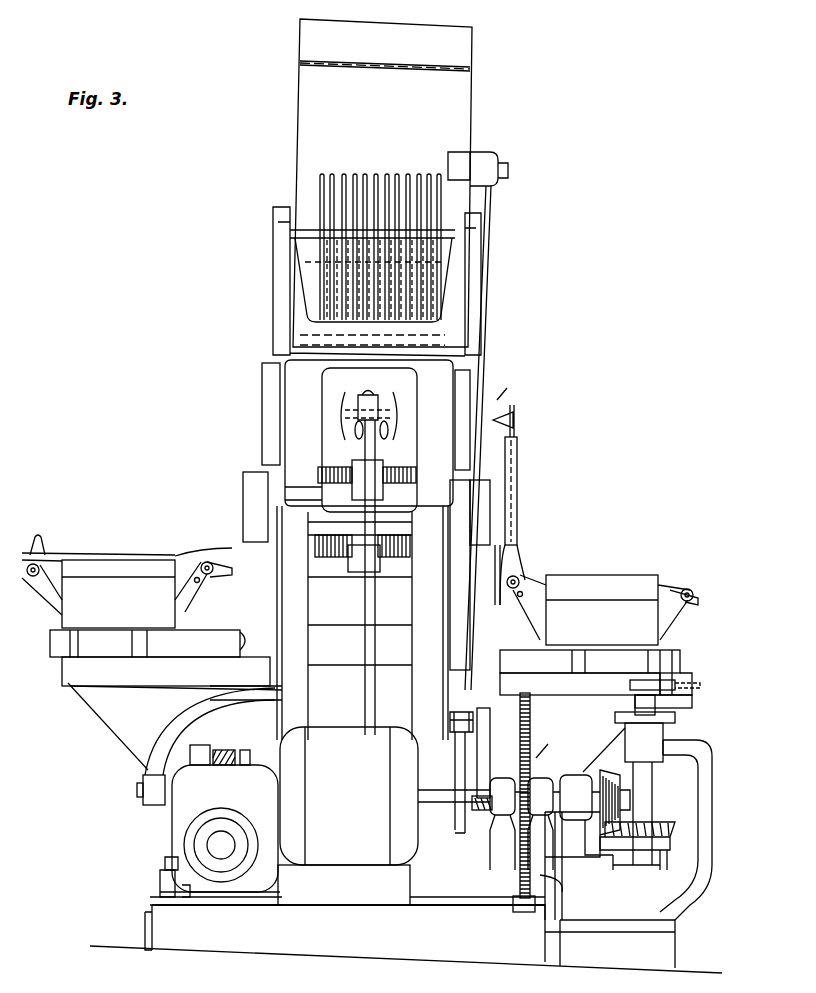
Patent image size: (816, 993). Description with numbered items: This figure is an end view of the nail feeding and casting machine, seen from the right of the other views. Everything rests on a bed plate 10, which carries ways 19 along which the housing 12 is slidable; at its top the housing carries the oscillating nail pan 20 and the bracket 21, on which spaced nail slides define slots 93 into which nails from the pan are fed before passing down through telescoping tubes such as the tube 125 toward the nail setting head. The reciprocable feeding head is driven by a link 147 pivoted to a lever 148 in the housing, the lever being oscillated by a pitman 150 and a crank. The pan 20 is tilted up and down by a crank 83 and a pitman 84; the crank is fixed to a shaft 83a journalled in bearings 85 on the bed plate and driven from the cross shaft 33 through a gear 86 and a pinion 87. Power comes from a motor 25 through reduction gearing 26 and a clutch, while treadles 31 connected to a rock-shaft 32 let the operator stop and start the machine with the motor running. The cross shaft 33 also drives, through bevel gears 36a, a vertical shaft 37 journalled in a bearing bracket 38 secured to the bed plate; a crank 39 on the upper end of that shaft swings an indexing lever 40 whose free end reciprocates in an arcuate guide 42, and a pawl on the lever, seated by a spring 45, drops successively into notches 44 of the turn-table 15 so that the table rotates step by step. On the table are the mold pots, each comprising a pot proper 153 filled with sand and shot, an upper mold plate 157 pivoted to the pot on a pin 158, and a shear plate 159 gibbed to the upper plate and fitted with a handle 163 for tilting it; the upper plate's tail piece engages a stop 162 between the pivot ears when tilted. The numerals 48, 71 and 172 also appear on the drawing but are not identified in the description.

The nail pan 20 is at (462, 104).
The slots 93 is at (330, 235).
The bracket 21 is at (286, 278).
The pitman 84 is at (483, 305).
The housing 12 is at (300, 410).
The link 147 is at (366, 450).
The telescoping tube 125 is at (318, 472).
The lever 148 is at (365, 520).
The pitman 150 is at (362, 605).
The upper mold plate 157 is at (517, 480).
The shear plate 159 is at (517, 433).
The handle 163 is at (510, 385).
The pin 158 is at (522, 572).
The bracket 172 is at (226, 548).
The stop 162 is at (200, 583).
The pot proper 153 is at (90, 602).
The notches 44 is at (138, 642).
The stop 48 is at (235, 630).
The turn-table 15 is at (95, 664).
The spring 45 is at (670, 662).
The arcuate guide 42 is at (700, 685).
The indexing lever 40 is at (692, 702).
The crank 39 is at (675, 718).
The vertical shaft 37 is at (653, 772).
The bearing bracket 38 is at (700, 822).
The bevel gears 36a is at (645, 822).
The cross shaft 33 is at (547, 762).
The pinion 87 is at (550, 747).
The gear 86 is at (530, 703).
The crank 83 is at (484, 745).
The bearings 85 is at (452, 780).
The shaft 83a is at (466, 806).
The motor 25 is at (328, 740).
The reduction gearing 26 is at (190, 812).
The coupling 71 is at (222, 748).
The treadles 31 is at (165, 858).
The rock-shaft 32 is at (238, 893).
The ways 19 is at (258, 900).
The bed plate 10 is at (170, 925).